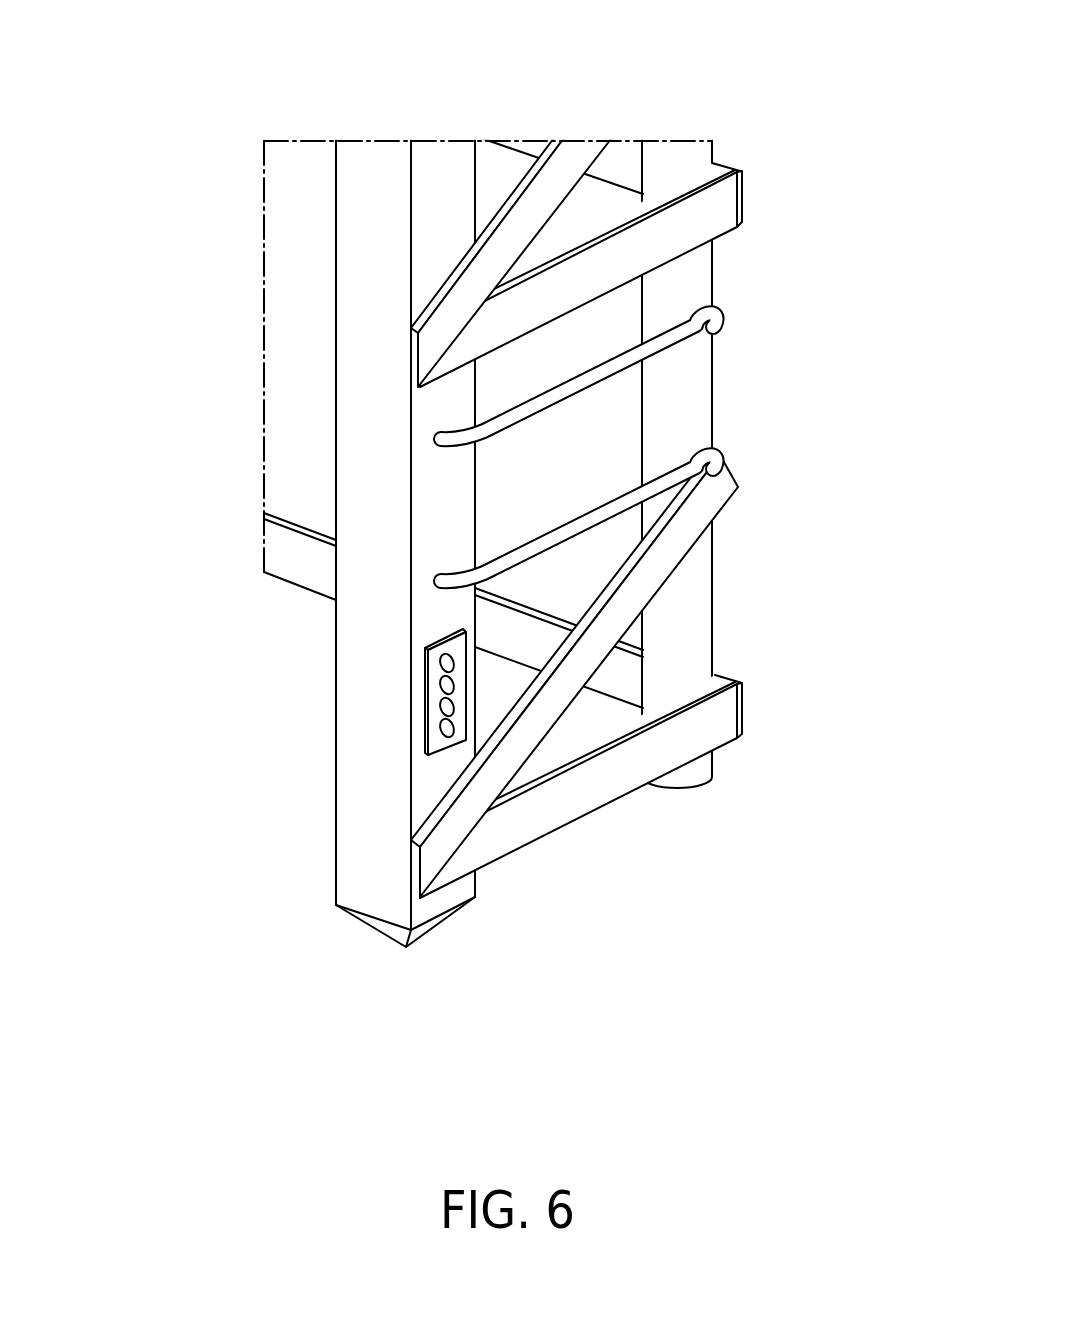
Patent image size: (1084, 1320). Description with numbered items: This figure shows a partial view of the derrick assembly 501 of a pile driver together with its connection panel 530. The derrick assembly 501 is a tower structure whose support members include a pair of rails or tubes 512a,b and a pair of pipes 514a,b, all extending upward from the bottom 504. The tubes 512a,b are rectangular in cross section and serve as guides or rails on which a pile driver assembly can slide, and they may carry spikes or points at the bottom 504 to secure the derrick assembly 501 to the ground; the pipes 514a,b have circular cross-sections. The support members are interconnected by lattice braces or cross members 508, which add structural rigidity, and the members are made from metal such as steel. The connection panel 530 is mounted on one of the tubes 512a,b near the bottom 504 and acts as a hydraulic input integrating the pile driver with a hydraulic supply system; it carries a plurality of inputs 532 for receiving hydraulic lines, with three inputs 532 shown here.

The derrick assembly 501 is at (501, 517).
The bottom 504 is at (653, 880).
The cross members 508 is at (673, 543).
The tubes 512a,b is at (304, 538).
The pipes 514a,b is at (631, 530).
The connection panel 530 is at (388, 784).
The inputs 532 is at (453, 666).